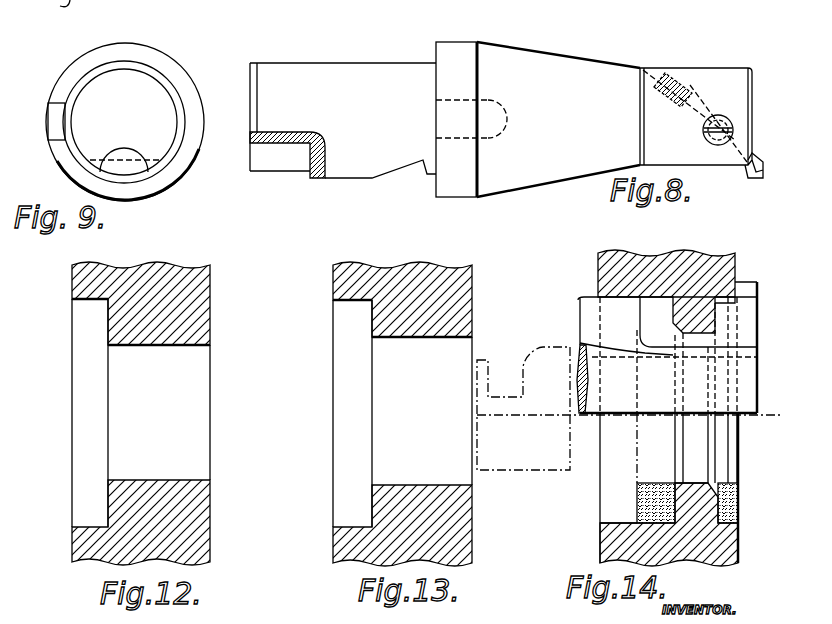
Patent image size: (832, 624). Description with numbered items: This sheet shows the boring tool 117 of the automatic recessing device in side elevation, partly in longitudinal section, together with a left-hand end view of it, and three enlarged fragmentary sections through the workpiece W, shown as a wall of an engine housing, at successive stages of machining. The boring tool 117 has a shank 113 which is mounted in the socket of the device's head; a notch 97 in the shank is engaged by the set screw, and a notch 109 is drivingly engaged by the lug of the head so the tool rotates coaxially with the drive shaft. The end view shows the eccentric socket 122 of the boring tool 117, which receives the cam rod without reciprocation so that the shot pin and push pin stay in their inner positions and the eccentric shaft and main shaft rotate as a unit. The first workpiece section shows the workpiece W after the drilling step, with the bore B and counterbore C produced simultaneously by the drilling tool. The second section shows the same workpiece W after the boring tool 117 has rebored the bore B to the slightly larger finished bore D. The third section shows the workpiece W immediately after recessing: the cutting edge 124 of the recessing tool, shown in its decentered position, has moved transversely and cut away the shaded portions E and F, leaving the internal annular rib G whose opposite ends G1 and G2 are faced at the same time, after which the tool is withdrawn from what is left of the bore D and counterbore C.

In FIG. 9, the shank 113 is at (143, 80).
In FIG. 8, the shank 113 is at (348, 70).
In FIG. 9, the notch 109 is at (52, 107).
In FIG. 8, the notch 109 is at (500, 102).
In FIG. 9, the eccentric socket 122 is at (127, 149).
In FIG. 8, the eccentric socket 122 is at (263, 145).
In FIG. 8, the notch 97 is at (398, 172).
In FIG. 8, the boring tool 117 is at (570, 30).
In FIG. 14, the cutting edge 124 is at (527, 360).
In FIG. 12, the workpiece W is at (210, 293).
In FIG. 13, the workpiece W is at (472, 283).
In FIG. 14, the workpiece W is at (598, 267).
In FIG. 12, the counterbore C is at (78, 306).
In FIG. 13, the counterbore C is at (335, 303).
In FIG. 14, the counterbore C is at (607, 518).
In FIG. 12, the bore B is at (188, 347).
In FIG. 13, the bore D is at (398, 338).
In FIG. 14, the bore D is at (697, 341).
In FIG. 14, the end of annular rib G1 is at (667, 297).
In FIG. 14, the end of annular rib G2 is at (740, 287).
In FIG. 14, the annular rib G is at (692, 488).
In FIG. 14, the shaded portion E is at (637, 497).
In FIG. 14, the shaded portion F is at (738, 498).